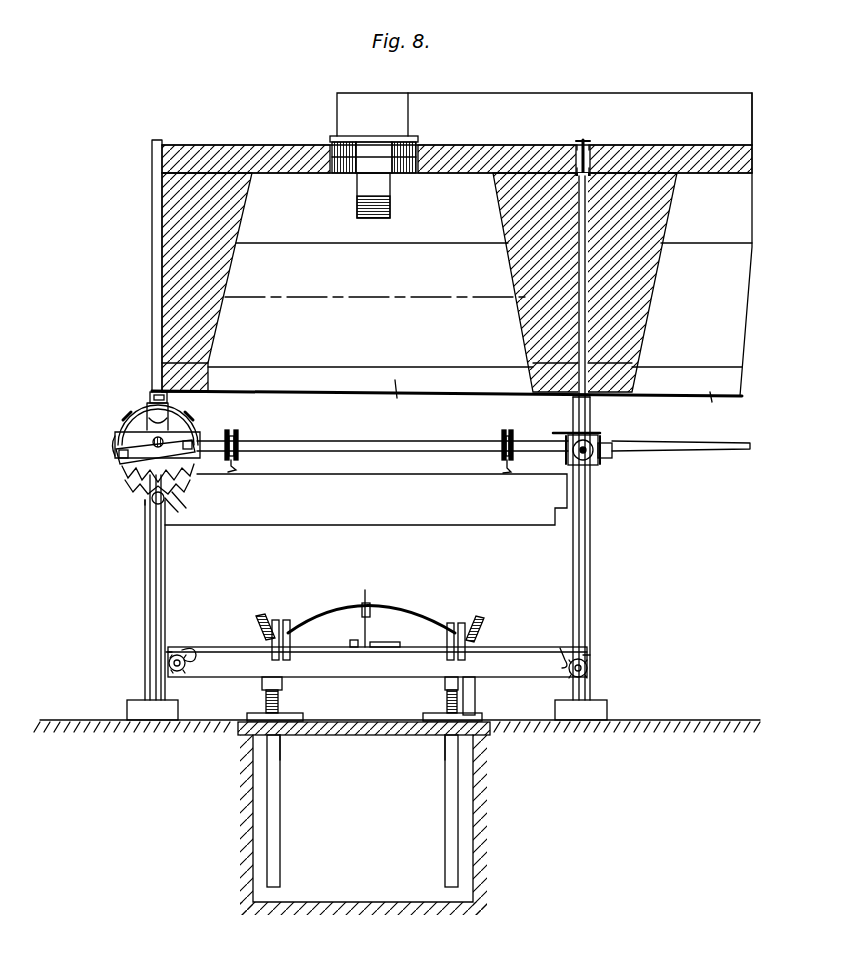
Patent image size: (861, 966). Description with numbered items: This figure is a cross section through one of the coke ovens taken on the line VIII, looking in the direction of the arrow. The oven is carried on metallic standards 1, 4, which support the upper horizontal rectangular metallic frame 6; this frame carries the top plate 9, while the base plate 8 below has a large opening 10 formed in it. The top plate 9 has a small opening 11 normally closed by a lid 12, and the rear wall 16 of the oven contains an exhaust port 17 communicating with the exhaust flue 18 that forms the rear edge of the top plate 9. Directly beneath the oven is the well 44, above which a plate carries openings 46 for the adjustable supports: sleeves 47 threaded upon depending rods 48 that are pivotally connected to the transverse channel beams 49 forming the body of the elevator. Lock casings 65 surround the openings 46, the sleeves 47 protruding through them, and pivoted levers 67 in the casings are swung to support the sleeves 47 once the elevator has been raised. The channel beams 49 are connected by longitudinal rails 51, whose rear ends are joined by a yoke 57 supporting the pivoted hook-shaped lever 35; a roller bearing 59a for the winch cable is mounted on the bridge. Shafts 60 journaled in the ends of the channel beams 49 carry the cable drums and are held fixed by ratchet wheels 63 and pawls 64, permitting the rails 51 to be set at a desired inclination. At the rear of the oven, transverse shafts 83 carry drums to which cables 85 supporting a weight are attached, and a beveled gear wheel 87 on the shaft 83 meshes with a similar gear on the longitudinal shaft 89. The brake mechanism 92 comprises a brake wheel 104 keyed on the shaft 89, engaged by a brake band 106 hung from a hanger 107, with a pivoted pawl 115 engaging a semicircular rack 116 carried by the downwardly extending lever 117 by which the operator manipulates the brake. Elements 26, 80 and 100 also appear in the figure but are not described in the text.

The metallic standard 1 is at (166, 584).
The metallic standard 4 is at (588, 553).
The horizontal rectangular metallic frame 6 is at (590, 141).
The base plate 8 is at (555, 401).
The top plate 9 is at (455, 152).
The large opening 10 is at (207, 374).
The small opening 11 is at (347, 168).
The lid 12 is at (346, 135).
The rear wall 16 is at (736, 306).
The exhaust port 17 is at (408, 135).
The exhaust flue 18 is at (556, 120).
The wedge block 26 is at (657, 297).
The pivoted hook-shaped lever 35 is at (367, 598).
The well 44 is at (363, 825).
The openings 46 is at (290, 732).
The sleeves 47 is at (281, 822).
The depending rods 48 is at (281, 699).
The transverse channel beams 49 is at (377, 662).
The longitudinal rails 51 is at (281, 622).
The yoke 57 is at (395, 614).
The roller bearing 59a is at (375, 641).
The shafts 60 is at (168, 663).
The ratchet wheels 63 is at (166, 655).
The pawls 64 is at (185, 650).
The lock casings 65 is at (252, 730).
The pivoted levers 67 is at (266, 742).
The plate 80 is at (366, 499).
The shafts 83 is at (334, 446).
The cables 85 is at (237, 463).
The beveled gear wheel 87 is at (239, 437).
The longitudinal shaft 89 is at (150, 447).
The brake mechanism 92 is at (150, 398).
The link 100 is at (175, 502).
The brake wheel 104 is at (183, 430).
The brake band 106 is at (128, 472).
The hanger 107 is at (147, 407).
The pivoted pawl 115 is at (118, 462).
The semicircular rack 116 is at (178, 480).
The lever 117 is at (152, 516).